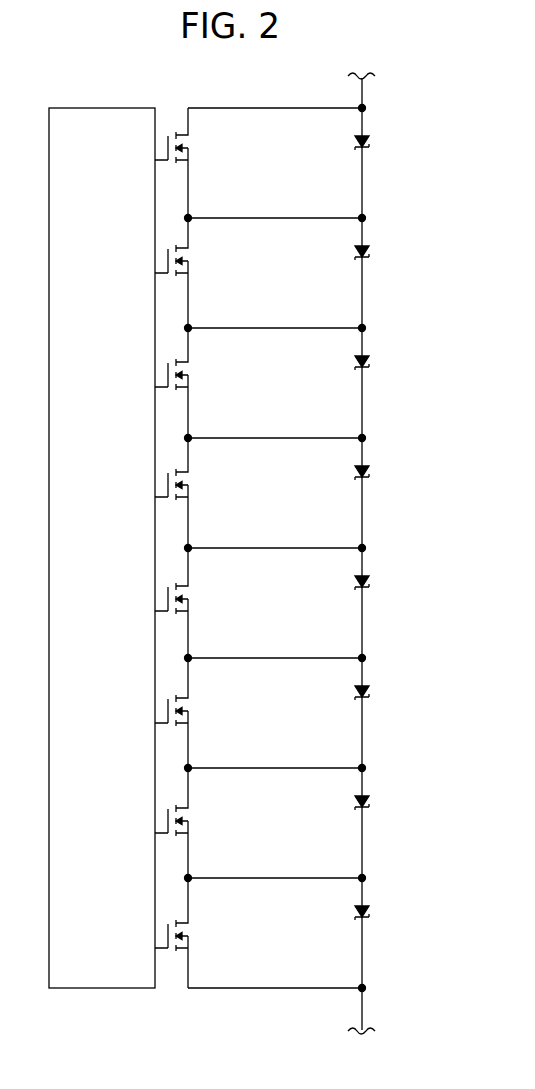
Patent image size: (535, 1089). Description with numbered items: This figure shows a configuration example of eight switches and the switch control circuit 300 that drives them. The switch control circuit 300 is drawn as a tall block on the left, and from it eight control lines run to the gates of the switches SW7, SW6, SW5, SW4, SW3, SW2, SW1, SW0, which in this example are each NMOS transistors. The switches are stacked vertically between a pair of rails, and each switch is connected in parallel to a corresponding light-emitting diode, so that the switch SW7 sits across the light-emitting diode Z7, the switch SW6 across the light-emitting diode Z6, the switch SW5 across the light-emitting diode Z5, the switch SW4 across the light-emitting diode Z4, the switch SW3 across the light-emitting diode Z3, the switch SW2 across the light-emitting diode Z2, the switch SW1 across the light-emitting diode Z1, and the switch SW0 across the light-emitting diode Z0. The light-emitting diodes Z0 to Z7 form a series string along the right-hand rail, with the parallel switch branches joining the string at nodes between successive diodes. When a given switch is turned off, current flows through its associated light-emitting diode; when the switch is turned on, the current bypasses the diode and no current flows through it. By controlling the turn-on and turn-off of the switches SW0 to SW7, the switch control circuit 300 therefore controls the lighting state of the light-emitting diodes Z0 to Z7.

The switch control circuit 300 is at (102, 107).
The switch SW7 is at (191, 150).
The switch SW6 is at (191, 263).
The switch SW5 is at (191, 377).
The switch SW4 is at (191, 487).
The switch SW3 is at (191, 601).
The switch SW2 is at (191, 713).
The switch SW1 is at (191, 823).
The switch SW0 is at (191, 938).
The light-emitting diode Z7 is at (370, 148).
The light-emitting diode Z6 is at (370, 258).
The light-emitting diode Z5 is at (370, 368).
The light-emitting diode Z4 is at (370, 478).
The light-emitting diode Z3 is at (370, 588).
The light-emitting diode Z2 is at (370, 698).
The light-emitting diode Z1 is at (370, 808).
The light-emitting diode Z0 is at (370, 918).